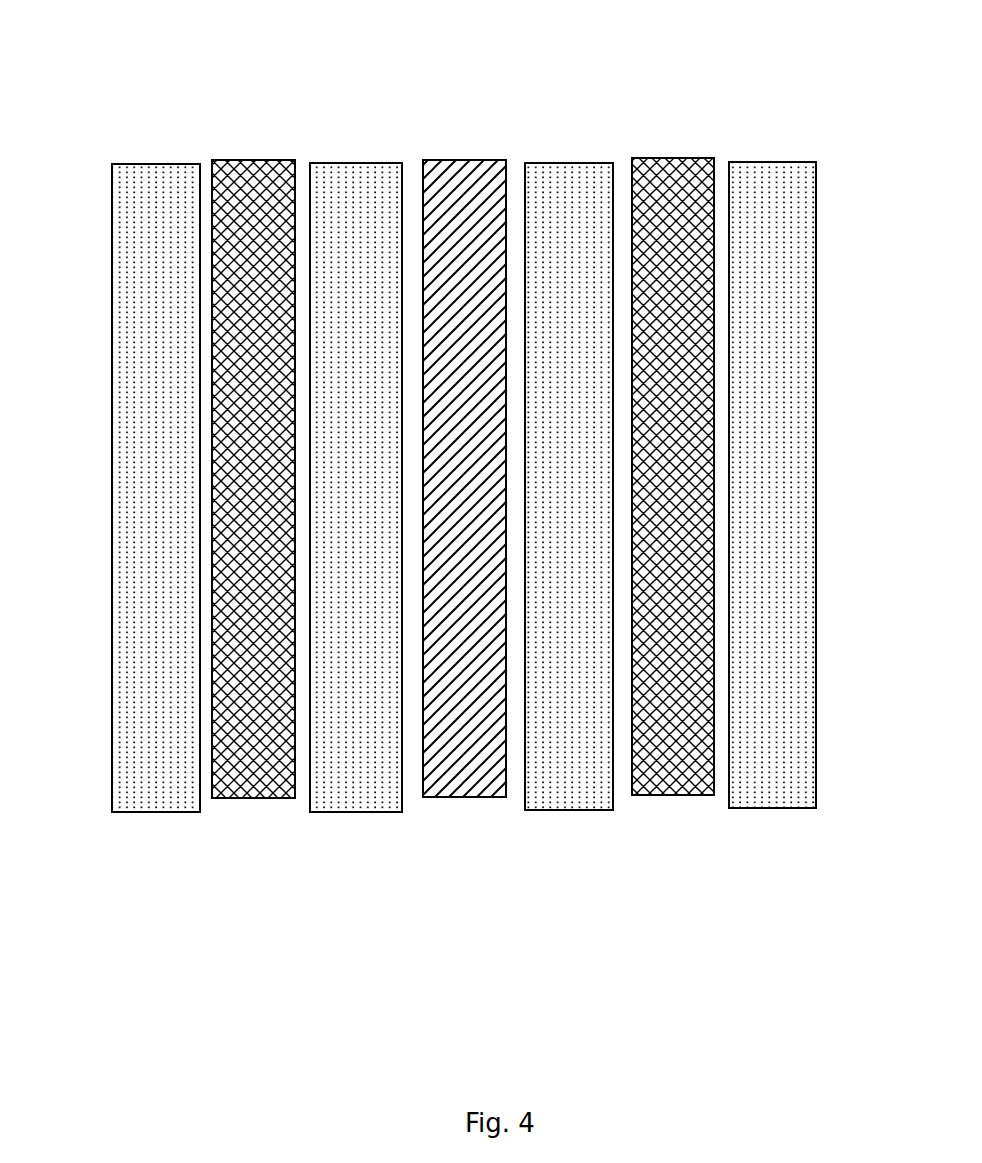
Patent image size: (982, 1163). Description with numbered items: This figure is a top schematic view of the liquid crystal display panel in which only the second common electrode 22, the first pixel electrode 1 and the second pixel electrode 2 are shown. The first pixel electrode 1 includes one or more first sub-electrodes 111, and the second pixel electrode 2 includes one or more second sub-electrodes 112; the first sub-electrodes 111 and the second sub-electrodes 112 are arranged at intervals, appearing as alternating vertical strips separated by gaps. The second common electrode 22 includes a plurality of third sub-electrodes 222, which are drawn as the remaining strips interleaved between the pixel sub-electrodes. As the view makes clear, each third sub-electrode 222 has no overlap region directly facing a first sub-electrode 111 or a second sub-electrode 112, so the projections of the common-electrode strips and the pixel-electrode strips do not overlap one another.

The first pixel electrode 1 is at (487, 465).
The first sub-electrode 111 is at (487, 544).
The second pixel electrode 2 is at (489, 505).
The second sub-electrode 112 is at (457, 768).
The second common electrode 22 is at (464, 542).
The third sub-electrode 222 is at (155, 207).